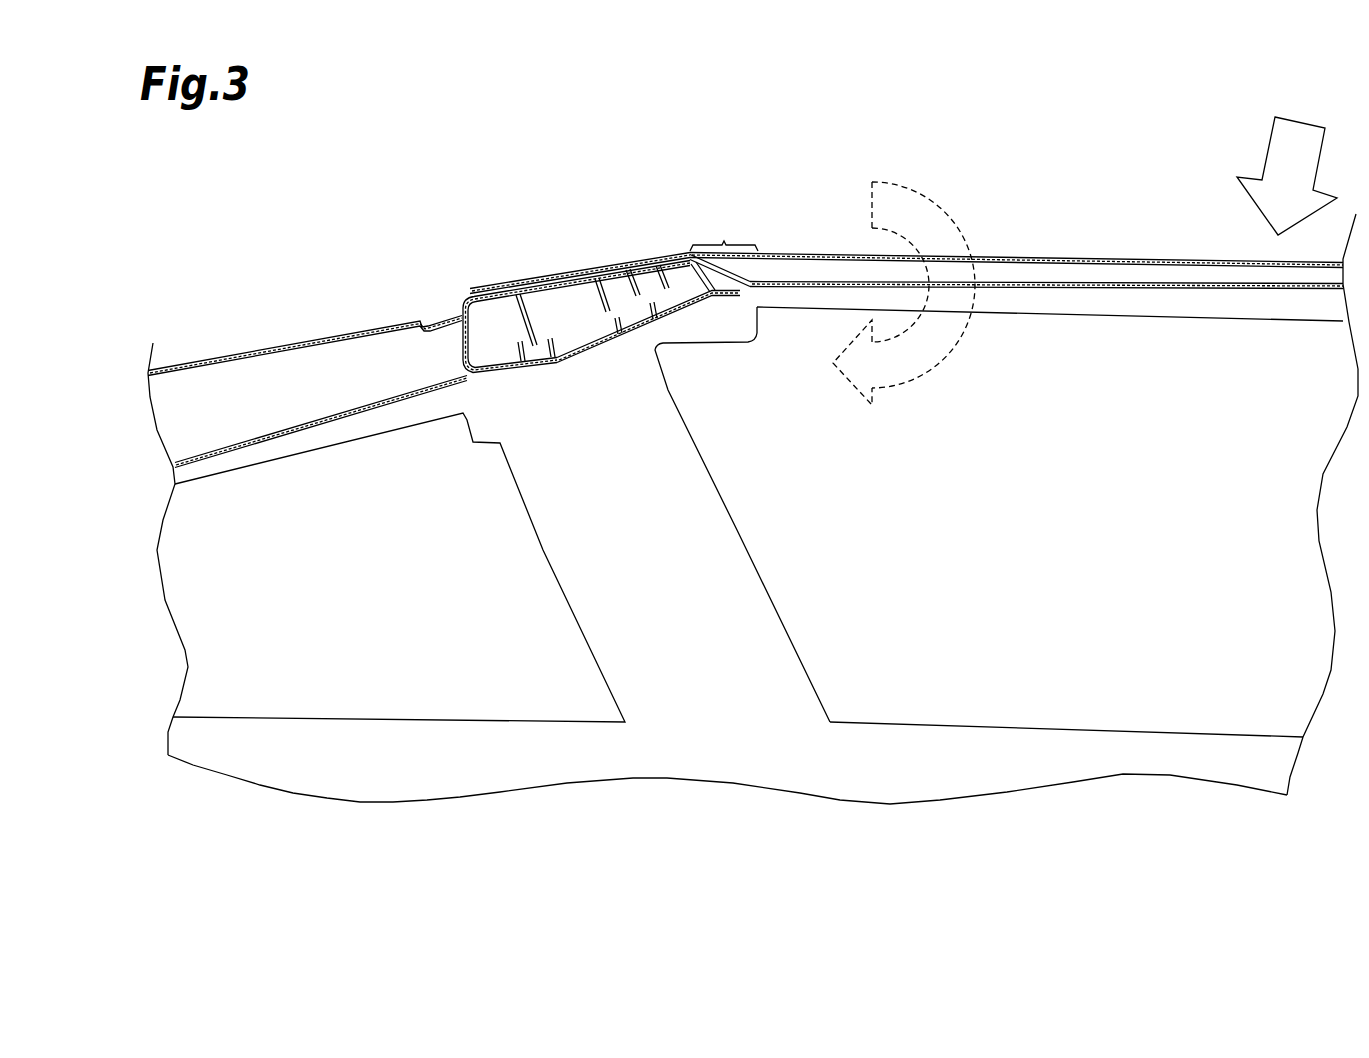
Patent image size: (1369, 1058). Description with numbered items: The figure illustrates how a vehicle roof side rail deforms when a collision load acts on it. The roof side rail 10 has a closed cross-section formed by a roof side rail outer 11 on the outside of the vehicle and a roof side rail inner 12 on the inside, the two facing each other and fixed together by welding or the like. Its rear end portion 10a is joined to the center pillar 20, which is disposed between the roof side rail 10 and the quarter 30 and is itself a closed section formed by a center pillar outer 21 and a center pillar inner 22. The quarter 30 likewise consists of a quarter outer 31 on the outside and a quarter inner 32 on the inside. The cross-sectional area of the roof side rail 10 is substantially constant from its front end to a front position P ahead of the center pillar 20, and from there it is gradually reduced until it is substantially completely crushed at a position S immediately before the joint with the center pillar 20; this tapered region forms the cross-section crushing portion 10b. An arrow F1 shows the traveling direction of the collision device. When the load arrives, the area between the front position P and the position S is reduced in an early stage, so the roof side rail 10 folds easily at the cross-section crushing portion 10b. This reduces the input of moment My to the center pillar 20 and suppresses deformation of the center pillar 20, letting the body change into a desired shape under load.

The roof side rail 10 is at (1016, 269).
The rear end portion of the roof side rail 10a is at (555, 285).
The cross-section crushing portion 10b is at (724, 233).
The roof side rail outer 11 is at (813, 250).
The roof side rail inner 12 is at (812, 290).
The center pillar 20 is at (463, 298).
The center pillar outer 21 is at (560, 285).
The center pillar inner 22 is at (607, 340).
The quarter 30 is at (307, 380).
The quarter outer 31 is at (232, 356).
The quarter inner 32 is at (328, 420).
The position immediately before the joint portion S is at (685, 264).
The front position P is at (748, 287).
The moment My is at (947, 217).
The arrow showing traveling direction of collision device F1 is at (1267, 140).